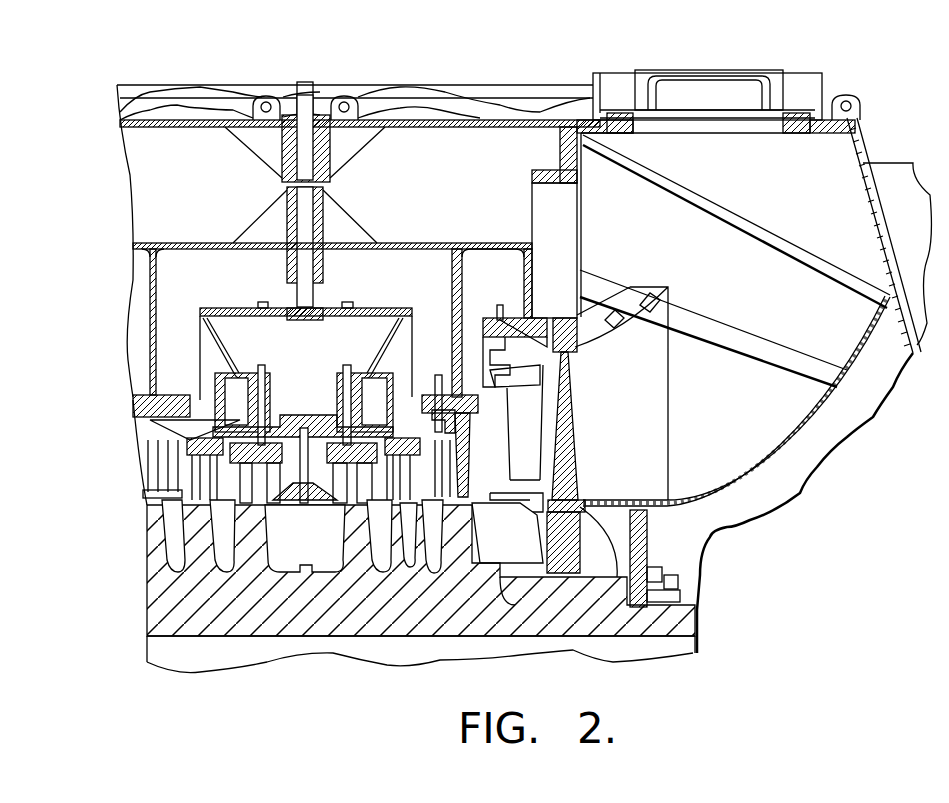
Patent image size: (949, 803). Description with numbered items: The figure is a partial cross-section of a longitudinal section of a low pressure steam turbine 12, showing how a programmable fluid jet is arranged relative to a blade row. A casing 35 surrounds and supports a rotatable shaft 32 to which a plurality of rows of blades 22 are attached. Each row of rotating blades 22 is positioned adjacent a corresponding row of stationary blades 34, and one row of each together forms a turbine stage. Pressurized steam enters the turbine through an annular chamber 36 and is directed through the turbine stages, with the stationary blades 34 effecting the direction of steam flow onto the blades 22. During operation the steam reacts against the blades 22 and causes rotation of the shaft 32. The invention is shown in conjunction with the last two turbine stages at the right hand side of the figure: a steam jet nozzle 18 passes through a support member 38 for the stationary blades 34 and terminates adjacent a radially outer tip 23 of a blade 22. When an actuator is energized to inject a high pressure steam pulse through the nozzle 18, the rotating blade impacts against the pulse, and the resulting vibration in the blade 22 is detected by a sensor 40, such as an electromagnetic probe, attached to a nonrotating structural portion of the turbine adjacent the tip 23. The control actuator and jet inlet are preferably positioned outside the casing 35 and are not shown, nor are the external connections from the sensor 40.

The low pressure steam turbine 12 is at (258, 74).
The casing 35 is at (430, 84).
The annular chamber 36 is at (361, 349).
The stationary blades 34 is at (177, 397).
The blades 22 is at (143, 450).
The radially outer tip 23 is at (570, 382).
The sensor 40 is at (572, 352).
The steam jet nozzle 18 is at (499, 292).
The support member 38 is at (487, 318).
The rotatable shaft 32 is at (157, 613).